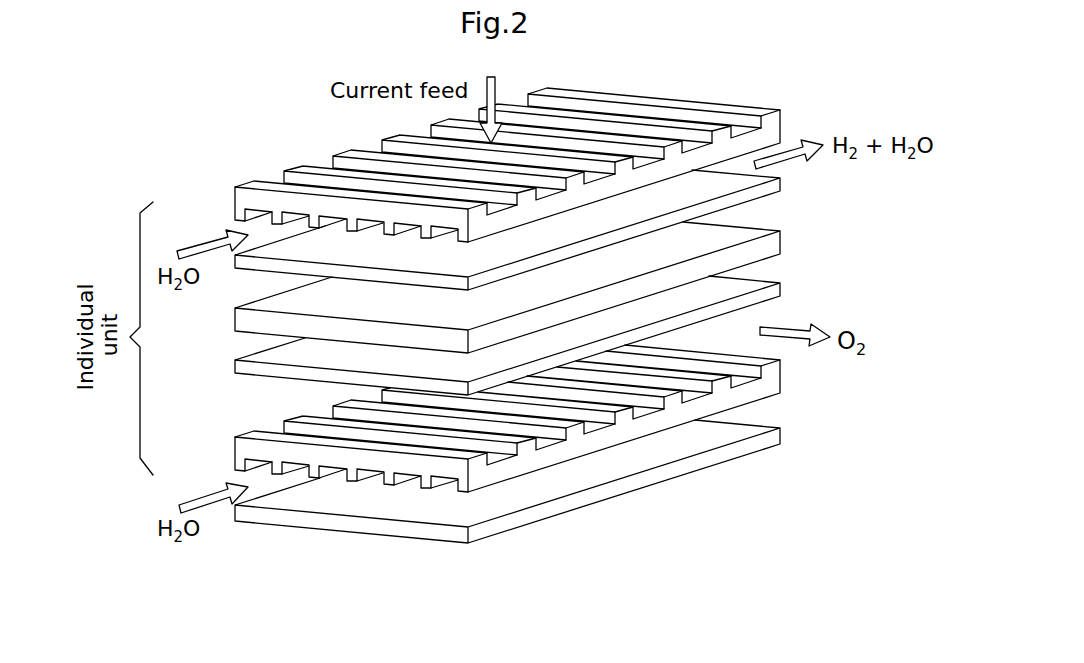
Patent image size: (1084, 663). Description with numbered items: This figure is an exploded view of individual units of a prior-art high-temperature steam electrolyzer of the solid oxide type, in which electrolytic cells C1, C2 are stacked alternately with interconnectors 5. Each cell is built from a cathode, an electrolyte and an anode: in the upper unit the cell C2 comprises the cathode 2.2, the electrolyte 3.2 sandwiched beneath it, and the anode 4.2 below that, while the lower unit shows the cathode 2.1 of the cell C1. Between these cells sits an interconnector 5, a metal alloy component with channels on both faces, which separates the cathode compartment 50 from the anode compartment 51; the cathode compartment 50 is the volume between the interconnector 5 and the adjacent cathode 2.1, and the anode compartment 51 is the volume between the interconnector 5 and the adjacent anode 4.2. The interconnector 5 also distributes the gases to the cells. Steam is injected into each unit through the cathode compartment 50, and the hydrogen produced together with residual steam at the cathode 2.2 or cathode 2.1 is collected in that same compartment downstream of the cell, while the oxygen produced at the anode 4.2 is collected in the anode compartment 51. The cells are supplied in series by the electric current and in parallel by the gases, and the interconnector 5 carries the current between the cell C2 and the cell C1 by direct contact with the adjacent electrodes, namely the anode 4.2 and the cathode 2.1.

The interconnector 5 is at (242, 200).
The cathode compartment 50 is at (263, 237).
The anode compartment 51 is at (272, 400).
The cathode 2.2 is at (782, 182).
The electrolyte 3.2 is at (782, 243).
The anode 4.2 is at (782, 290).
The cathode 2.1 is at (782, 435).
The electrolytic cell C2 is at (228, 232).
The electrolytic cell C1 is at (228, 503).